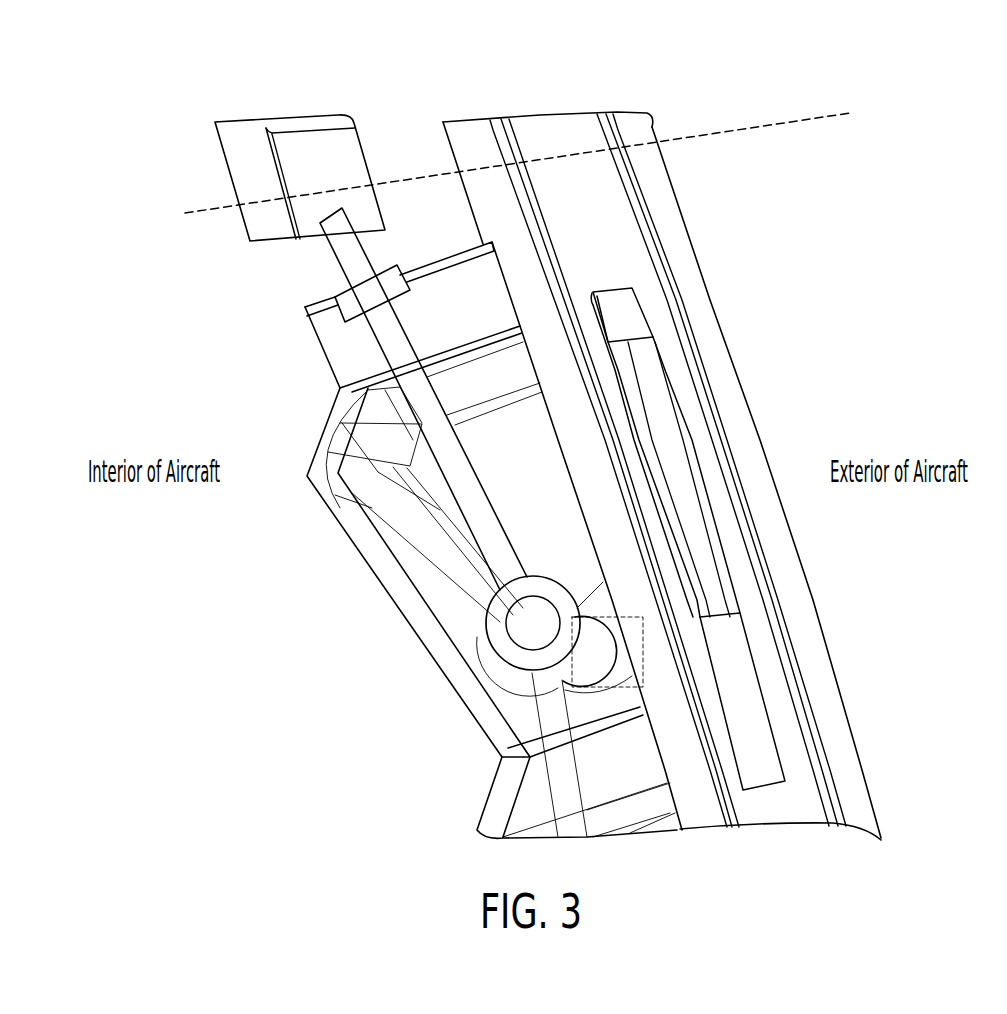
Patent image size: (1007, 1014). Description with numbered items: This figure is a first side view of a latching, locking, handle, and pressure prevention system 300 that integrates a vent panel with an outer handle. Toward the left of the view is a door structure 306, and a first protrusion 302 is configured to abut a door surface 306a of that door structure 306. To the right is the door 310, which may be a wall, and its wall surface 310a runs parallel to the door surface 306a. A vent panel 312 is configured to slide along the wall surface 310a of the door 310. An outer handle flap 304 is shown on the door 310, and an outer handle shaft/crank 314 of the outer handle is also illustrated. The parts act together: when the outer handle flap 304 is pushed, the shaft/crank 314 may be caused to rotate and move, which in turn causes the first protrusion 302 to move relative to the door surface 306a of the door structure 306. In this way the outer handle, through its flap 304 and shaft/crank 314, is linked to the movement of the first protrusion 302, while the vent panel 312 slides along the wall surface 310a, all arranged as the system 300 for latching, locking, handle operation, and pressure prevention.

The latching, locking, handle, and pressure prevention system 300 is at (172, 80).
The first protrusion 302 is at (348, 274).
The outer handle flap 304 is at (663, 440).
The door structure 306 is at (275, 154).
The door surface 306a is at (272, 137).
The door 310 is at (662, 448).
The wall surface 310a is at (449, 121).
The vent panel 312 is at (399, 576).
The outer handle shaft/crank 314 is at (592, 662).